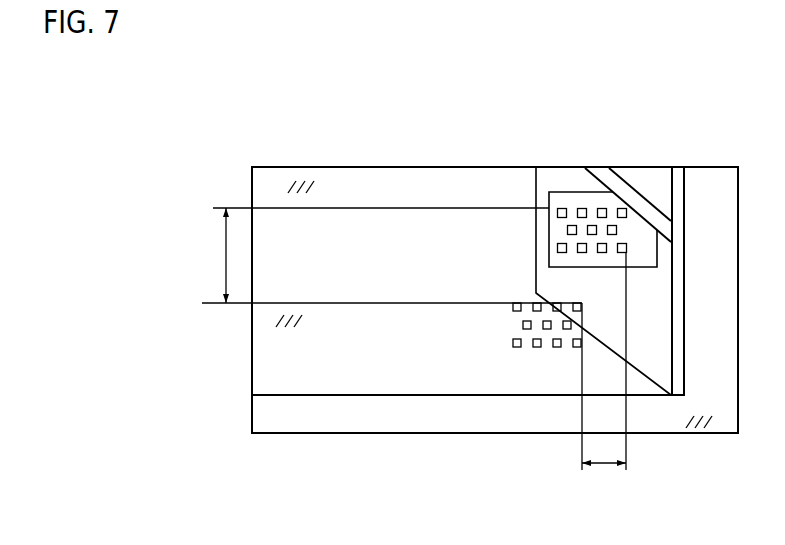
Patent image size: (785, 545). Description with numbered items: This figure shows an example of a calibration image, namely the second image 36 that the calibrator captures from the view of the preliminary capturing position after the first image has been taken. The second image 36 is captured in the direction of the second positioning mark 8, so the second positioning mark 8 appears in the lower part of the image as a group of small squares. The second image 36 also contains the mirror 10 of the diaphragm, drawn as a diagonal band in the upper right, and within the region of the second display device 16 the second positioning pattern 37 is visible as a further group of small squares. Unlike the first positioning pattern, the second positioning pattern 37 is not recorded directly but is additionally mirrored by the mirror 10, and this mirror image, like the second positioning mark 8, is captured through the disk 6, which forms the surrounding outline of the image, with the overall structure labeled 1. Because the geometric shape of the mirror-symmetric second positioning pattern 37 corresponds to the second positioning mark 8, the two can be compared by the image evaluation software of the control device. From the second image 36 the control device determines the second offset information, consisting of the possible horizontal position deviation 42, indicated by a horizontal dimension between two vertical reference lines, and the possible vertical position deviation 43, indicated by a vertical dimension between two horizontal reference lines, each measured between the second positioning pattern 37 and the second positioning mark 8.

The display device 1 is at (350, 397).
The disk 6 is at (510, 397).
The second image 36 is at (383, 167).
The mirror of the diaphragm 10 is at (641, 190).
The second display device 16 is at (563, 190).
The second positioning pattern 37 is at (612, 257).
The second positioning mark 8 is at (497, 332).
The vertical position deviation 43 is at (226, 250).
The horizontal position deviation 42 is at (605, 465).